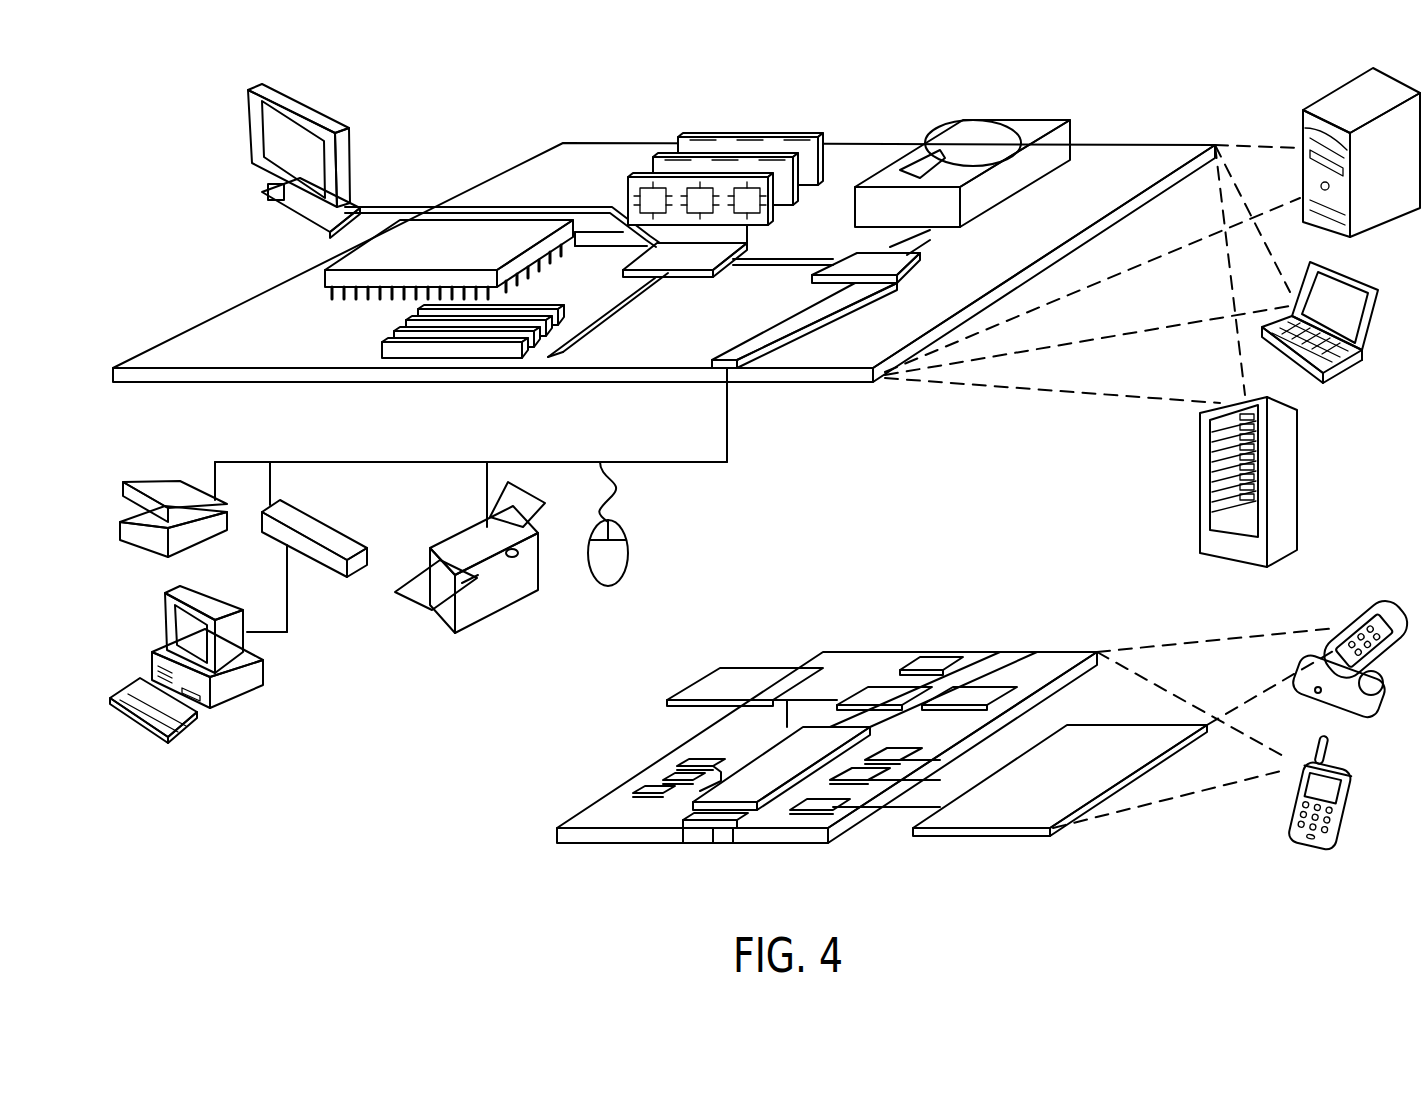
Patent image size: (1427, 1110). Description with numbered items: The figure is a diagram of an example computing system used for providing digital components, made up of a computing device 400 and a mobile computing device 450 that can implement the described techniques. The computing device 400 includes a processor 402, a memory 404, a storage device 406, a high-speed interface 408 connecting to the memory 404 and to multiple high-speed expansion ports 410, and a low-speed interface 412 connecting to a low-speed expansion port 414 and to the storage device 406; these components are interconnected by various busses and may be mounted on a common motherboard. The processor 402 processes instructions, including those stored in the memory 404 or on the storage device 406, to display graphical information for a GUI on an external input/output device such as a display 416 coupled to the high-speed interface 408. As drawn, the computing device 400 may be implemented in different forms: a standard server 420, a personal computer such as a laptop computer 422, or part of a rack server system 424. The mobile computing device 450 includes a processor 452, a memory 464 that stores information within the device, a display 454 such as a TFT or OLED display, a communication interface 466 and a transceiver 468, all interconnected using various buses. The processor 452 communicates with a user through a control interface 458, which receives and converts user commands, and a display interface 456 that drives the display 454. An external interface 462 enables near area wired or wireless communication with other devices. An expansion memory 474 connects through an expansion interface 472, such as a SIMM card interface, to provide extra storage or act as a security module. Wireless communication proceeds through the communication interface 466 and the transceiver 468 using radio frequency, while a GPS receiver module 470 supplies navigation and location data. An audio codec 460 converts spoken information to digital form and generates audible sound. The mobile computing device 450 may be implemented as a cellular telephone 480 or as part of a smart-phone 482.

The computing device 400 is at (178, 98).
The processor 402 is at (325, 272).
The memory 404 is at (688, 138).
The storage device 406 is at (955, 126).
The high-speed interface 408 is at (667, 258).
The high-speed expansion ports 410 is at (407, 340).
The low-speed interface 412 is at (850, 257).
The low-speed expansion port 414 is at (740, 370).
The display 416 is at (310, 106).
The standard server 420 is at (1303, 128).
The laptop computer 422 is at (1336, 356).
The rack server system 424 is at (1199, 508).
The mobile computing device 450 is at (526, 800).
The processor 452 is at (753, 793).
The display 454 is at (1018, 814).
The display interface 456 is at (826, 812).
The control interface 458 is at (862, 780).
The audio codec 460 is at (892, 765).
The external interface 462 is at (713, 830).
The memory 464 is at (655, 785).
The communication interface 466 is at (885, 695).
The transceiver 468 is at (970, 693).
The GPS receiver module 470 is at (938, 660).
The expansion interface 472 is at (787, 664).
The expansion memory 474 is at (718, 668).
The cellular telephone 480 is at (1352, 612).
The smart-phone 482 is at (1296, 802).